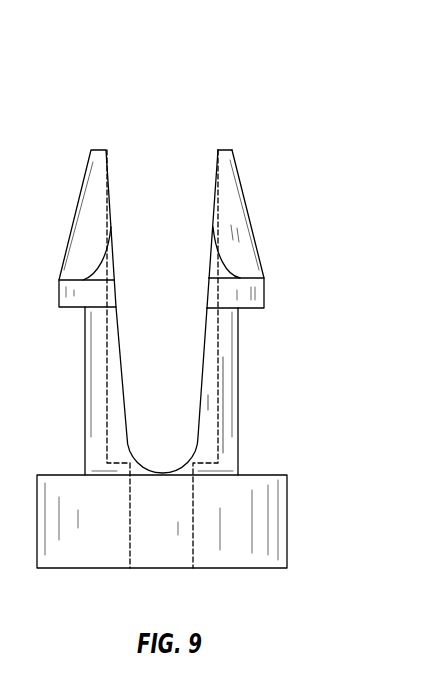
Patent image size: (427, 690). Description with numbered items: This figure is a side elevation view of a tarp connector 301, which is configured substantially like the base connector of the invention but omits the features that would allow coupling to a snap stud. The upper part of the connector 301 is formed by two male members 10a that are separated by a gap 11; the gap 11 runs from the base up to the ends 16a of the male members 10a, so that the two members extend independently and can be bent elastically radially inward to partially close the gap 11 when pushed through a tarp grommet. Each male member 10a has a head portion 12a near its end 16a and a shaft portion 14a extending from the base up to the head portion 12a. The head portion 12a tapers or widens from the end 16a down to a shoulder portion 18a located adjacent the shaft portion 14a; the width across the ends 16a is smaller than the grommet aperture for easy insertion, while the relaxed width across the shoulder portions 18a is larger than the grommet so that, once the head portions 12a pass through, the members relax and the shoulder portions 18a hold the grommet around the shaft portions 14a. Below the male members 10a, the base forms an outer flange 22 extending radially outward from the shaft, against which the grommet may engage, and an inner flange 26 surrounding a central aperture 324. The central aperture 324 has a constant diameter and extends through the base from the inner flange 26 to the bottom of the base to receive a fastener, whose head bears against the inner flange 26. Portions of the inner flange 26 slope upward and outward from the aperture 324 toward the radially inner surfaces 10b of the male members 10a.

The connector 301 is at (315, 86).
The gap 11 is at (159, 166).
The male member 10a is at (77, 126).
The end 16a is at (223, 150).
The head portion 12a is at (228, 215).
The shoulder portion 18a is at (252, 292).
The shaft portion 14a is at (223, 350).
The radially inner surface 10b is at (220, 413).
The inner flange 26 is at (115, 460).
The outer flange 22 is at (255, 475).
The central aperture 324 is at (175, 495).